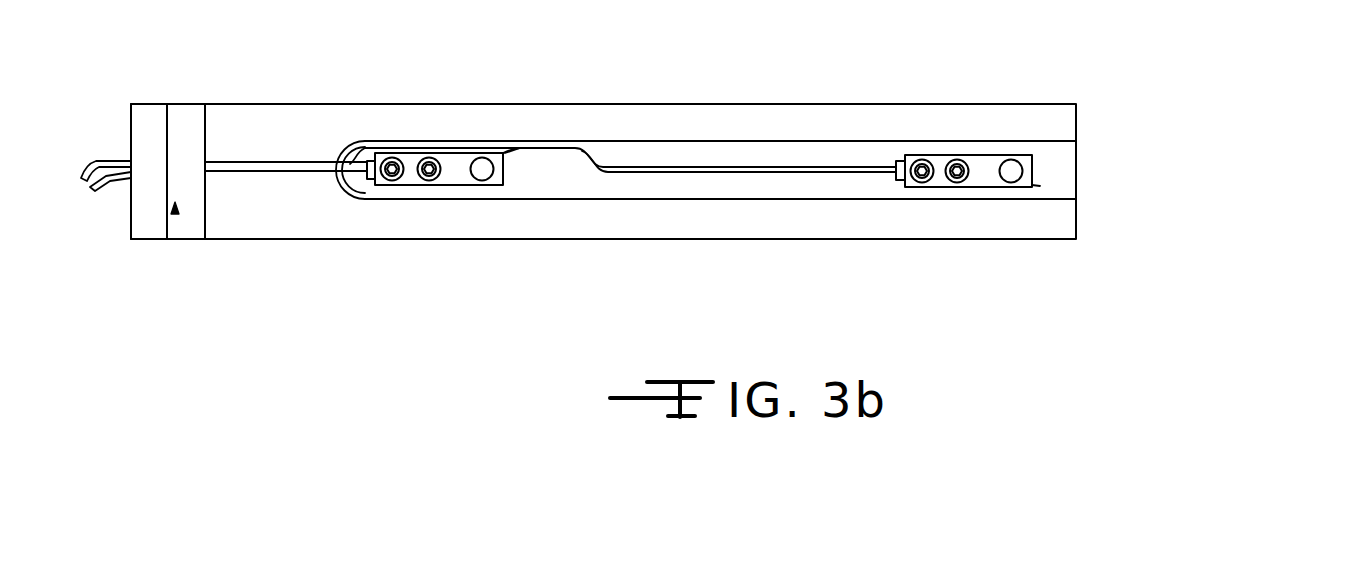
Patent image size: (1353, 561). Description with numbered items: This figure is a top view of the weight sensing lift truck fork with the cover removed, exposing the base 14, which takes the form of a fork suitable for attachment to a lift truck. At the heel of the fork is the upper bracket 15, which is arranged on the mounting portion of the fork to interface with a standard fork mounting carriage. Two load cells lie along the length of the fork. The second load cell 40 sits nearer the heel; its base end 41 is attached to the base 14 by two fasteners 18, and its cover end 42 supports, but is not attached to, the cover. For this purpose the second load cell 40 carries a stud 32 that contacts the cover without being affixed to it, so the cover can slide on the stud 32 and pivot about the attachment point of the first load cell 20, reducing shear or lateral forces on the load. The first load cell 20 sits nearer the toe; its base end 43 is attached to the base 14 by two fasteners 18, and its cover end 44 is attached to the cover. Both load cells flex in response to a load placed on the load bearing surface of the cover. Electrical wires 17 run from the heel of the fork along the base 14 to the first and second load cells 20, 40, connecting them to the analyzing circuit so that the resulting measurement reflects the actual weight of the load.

The base 14 is at (176, 213).
The upper bracket 15 is at (143, 226).
The electrical wires 17 is at (272, 162).
The fasteners 18 is at (392, 158).
The first load cell 20 is at (980, 187).
The stud 32 is at (482, 185).
The second load cell 40 is at (450, 187).
The base end 41 is at (390, 187).
The cover end 42 is at (507, 155).
The base end 43 is at (913, 187).
The cover end 44 is at (1032, 185).